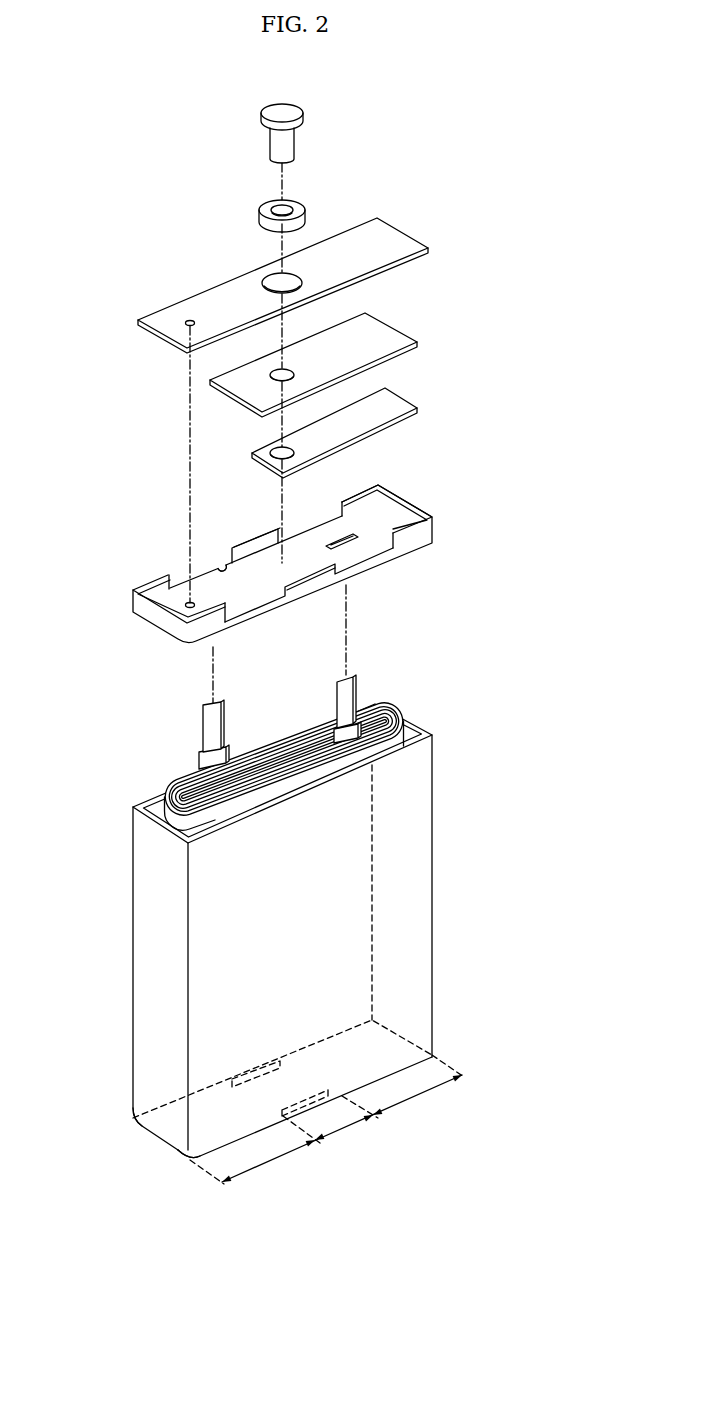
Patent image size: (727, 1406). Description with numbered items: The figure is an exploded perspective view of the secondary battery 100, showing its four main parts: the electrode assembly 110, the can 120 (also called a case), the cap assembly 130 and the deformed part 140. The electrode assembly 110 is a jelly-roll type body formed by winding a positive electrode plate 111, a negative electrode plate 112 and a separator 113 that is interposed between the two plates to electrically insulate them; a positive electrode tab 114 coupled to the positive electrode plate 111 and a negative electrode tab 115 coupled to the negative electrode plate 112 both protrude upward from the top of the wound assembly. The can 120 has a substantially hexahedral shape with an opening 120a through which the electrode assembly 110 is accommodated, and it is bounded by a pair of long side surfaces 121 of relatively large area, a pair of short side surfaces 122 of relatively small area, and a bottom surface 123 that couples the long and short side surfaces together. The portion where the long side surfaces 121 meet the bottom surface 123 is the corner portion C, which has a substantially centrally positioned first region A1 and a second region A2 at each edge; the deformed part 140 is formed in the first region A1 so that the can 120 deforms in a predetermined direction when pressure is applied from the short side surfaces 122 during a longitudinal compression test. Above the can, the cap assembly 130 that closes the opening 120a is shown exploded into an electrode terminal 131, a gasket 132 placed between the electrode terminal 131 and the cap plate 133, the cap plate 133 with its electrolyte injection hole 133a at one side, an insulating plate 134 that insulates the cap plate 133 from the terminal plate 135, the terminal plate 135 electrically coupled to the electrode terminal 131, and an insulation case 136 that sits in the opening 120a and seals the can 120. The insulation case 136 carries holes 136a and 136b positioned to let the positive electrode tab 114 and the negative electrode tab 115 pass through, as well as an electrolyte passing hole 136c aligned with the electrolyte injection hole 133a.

The secondary battery 100 is at (103, 91).
The electrode assembly 110 is at (465, 668).
The positive electrode plate 111 is at (399, 717).
The negative electrode plate 112 is at (373, 712).
The separator 113 is at (388, 711).
The positive electrode tab 114 is at (212, 728).
The negative electrode tab 115 is at (340, 699).
The can 120 is at (440, 851).
The opening 120a is at (424, 723).
The long side surfaces 121 is at (207, 897).
The short side surfaces 122 is at (173, 930).
The bottom surface 123 is at (235, 1135).
The cap assembly 130 is at (492, 108).
The electrode terminal 131 is at (296, 115).
The gasket 132 is at (262, 206).
The cap plate 133 is at (402, 237).
The electrolyte injection hole 133a is at (188, 320).
The insulating plate 134 is at (392, 332).
The terminal plate 135 is at (403, 400).
The insulation case 136 is at (407, 512).
The hole 136a is at (222, 566).
The hole 136b is at (340, 538).
The electrolyte passing hole 136c is at (190, 603).
The deformed part 140 is at (340, 1097).
The corner portion C is at (217, 1152).
The first region A1 is at (330, 1123).
The second region A2 is at (327, 1119).